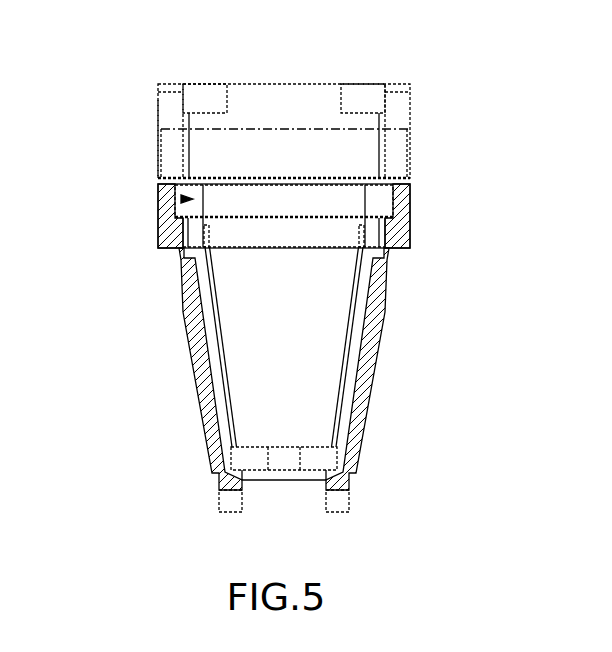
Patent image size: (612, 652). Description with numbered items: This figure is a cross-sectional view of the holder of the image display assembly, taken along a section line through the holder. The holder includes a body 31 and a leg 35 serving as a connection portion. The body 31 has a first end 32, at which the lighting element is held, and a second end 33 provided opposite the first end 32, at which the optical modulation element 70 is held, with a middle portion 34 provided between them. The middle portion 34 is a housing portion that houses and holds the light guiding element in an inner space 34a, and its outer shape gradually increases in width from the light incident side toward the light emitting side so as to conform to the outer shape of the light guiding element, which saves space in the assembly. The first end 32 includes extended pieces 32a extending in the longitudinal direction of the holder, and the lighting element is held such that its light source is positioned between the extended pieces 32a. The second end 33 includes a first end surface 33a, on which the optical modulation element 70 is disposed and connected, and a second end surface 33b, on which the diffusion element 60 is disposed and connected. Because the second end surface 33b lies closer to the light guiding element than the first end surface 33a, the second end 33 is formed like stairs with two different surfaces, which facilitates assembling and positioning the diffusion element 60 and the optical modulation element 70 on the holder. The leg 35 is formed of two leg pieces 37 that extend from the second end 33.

The body 31 is at (173, 348).
The first end 32 is at (303, 482).
The extended pieces 32a is at (350, 497).
The second end 33 is at (174, 193).
The first end surface 33a is at (212, 177).
The second end surface 33b is at (378, 209).
The middle portion 34 is at (203, 373).
The inner space 34a is at (320, 357).
The leg 35 is at (152, 124).
The leg pieces 37 is at (162, 102).
The diffusion element 60 is at (323, 206).
The optical modulation element 70 is at (268, 128).